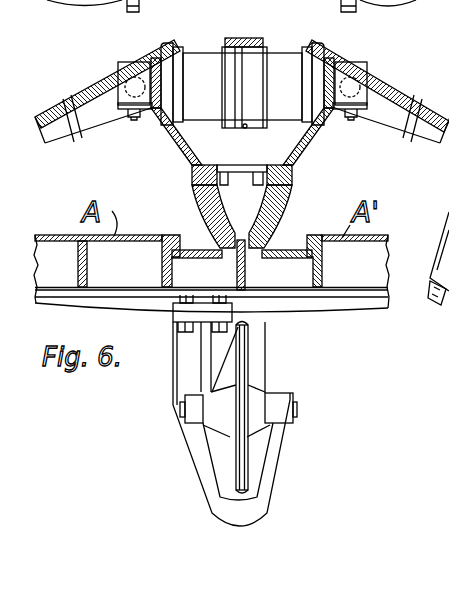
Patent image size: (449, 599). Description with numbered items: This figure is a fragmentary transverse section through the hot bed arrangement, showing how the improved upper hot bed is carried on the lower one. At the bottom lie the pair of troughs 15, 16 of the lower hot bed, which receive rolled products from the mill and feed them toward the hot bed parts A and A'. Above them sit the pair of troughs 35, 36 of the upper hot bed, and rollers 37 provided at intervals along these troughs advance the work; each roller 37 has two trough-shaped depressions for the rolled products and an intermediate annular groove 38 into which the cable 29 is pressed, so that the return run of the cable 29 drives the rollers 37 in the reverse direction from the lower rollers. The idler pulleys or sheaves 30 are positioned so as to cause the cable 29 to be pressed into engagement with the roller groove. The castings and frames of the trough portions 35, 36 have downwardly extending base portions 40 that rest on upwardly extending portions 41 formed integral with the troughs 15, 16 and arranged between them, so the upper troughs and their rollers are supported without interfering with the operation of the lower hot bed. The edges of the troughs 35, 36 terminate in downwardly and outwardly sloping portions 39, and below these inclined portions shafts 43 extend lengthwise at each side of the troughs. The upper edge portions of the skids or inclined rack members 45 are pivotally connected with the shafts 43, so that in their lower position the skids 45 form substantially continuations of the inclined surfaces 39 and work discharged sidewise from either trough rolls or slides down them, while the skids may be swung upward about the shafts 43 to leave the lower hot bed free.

The trough 15 is at (200, 252).
The trough 16 is at (280, 253).
The cable 29 is at (245, 128).
The idler pulley 30 is at (248, 365).
The trough 35 is at (185, 50).
The trough 36 is at (304, 50).
The roller 37 is at (258, 108).
The annular groove 38 is at (250, 52).
The sloping portion 39 is at (145, 50).
The base portion 40 is at (334, 133).
The upwardly extending portion 41 is at (291, 175).
The shaft 43 is at (140, 67).
The skid 45 is at (86, 116).